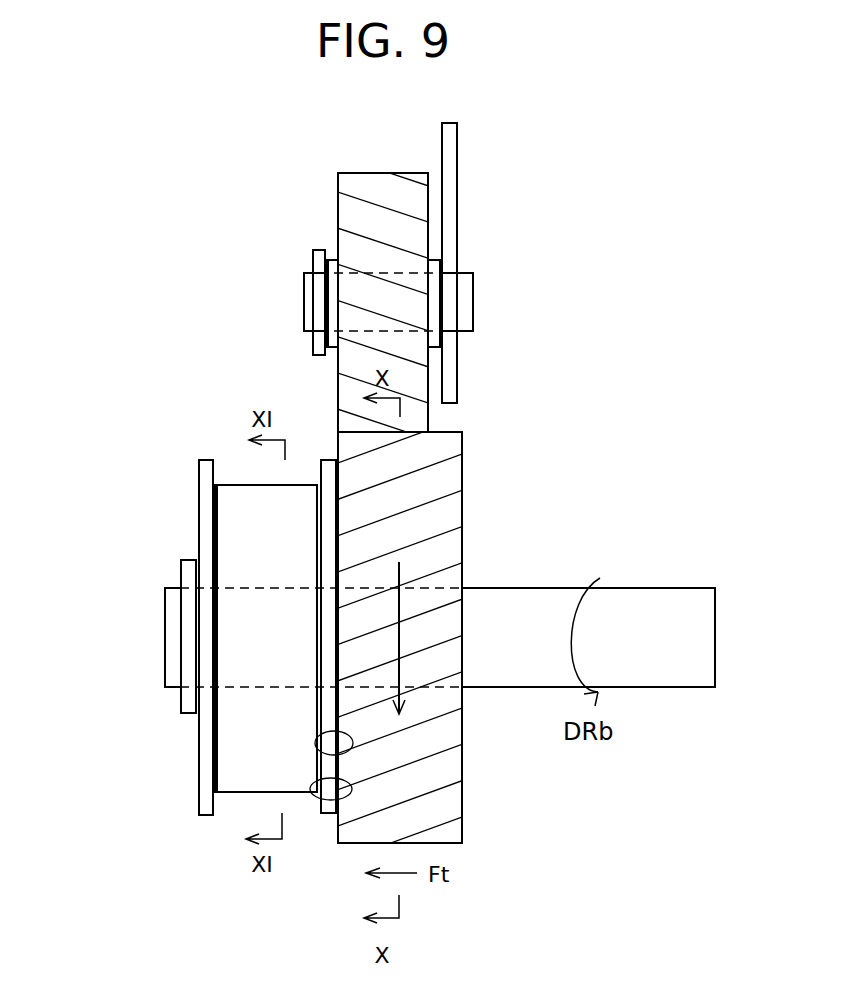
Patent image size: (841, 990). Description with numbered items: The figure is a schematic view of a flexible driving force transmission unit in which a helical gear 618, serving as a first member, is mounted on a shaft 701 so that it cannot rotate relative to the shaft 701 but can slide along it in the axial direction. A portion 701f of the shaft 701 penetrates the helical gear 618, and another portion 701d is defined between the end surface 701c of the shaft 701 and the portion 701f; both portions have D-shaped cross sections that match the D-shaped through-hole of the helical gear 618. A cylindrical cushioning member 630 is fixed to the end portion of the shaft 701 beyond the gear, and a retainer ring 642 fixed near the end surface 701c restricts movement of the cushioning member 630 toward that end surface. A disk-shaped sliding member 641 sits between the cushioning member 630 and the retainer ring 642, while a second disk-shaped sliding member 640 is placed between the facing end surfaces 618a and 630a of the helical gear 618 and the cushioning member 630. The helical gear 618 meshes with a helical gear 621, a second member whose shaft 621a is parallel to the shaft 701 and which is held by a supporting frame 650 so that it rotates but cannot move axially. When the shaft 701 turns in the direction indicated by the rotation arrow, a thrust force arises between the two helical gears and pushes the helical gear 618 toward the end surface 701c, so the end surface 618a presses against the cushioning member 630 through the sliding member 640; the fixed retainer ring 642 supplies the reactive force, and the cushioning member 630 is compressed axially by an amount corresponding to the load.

The helical gear 618 is at (462, 478).
The end surface of helical gear 618a is at (352, 799).
The helical gear 621 is at (338, 195).
The shaft 621a is at (473, 291).
The cushioning member 630 is at (237, 485).
The end surface of cushioning member 630a is at (316, 754).
The sliding member 640 is at (328, 460).
The sliding member 641 is at (203, 460).
The retainer ring 642 is at (190, 560).
The supporting frame 650 is at (457, 158).
The shaft 701 is at (658, 588).
The end surface of shaft 701c is at (165, 638).
The portion of shaft 701d is at (256, 648).
The portion of shaft 701f is at (450, 617).